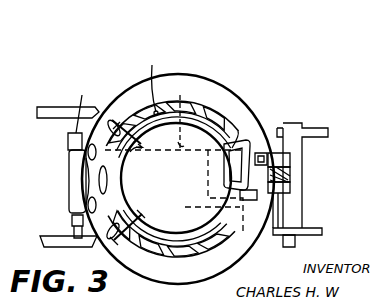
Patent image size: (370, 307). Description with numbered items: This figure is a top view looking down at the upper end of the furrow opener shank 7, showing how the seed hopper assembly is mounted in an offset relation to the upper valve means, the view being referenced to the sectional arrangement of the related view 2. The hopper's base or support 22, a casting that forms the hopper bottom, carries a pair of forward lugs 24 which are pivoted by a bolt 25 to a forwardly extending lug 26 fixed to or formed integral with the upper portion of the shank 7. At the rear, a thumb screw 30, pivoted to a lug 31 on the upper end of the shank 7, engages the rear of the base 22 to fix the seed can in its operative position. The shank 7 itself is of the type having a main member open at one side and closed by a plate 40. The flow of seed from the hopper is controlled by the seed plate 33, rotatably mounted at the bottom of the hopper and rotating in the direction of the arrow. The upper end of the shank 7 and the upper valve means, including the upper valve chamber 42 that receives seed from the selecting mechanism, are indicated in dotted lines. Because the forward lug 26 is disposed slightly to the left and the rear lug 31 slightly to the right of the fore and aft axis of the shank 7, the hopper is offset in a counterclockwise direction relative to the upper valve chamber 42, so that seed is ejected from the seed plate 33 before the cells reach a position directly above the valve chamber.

The brake shoe 2 is at (244, 136).
The furrow opener shank 7 is at (176, 156).
The base or support 22 is at (218, 100).
The forward lugs 24 is at (70, 143).
The bolt 25 is at (68, 105).
The forwardly extending lug 26 is at (78, 193).
The thumb screw 30 is at (290, 176).
The rear lug 31 is at (288, 161).
The seed plate 33 is at (144, 85).
The plate 40 is at (248, 235).
The upper valve chamber 42 is at (203, 178).